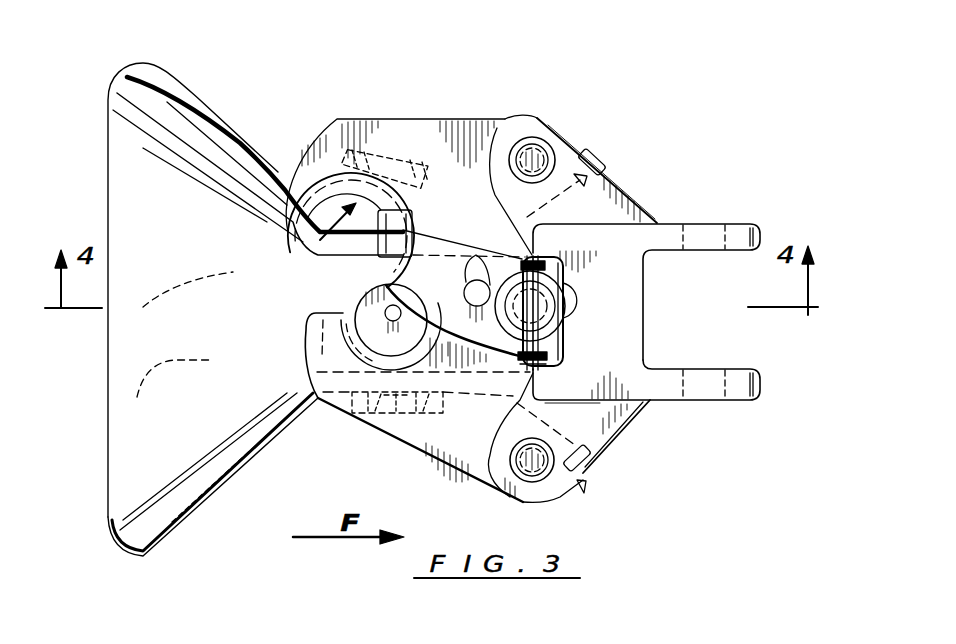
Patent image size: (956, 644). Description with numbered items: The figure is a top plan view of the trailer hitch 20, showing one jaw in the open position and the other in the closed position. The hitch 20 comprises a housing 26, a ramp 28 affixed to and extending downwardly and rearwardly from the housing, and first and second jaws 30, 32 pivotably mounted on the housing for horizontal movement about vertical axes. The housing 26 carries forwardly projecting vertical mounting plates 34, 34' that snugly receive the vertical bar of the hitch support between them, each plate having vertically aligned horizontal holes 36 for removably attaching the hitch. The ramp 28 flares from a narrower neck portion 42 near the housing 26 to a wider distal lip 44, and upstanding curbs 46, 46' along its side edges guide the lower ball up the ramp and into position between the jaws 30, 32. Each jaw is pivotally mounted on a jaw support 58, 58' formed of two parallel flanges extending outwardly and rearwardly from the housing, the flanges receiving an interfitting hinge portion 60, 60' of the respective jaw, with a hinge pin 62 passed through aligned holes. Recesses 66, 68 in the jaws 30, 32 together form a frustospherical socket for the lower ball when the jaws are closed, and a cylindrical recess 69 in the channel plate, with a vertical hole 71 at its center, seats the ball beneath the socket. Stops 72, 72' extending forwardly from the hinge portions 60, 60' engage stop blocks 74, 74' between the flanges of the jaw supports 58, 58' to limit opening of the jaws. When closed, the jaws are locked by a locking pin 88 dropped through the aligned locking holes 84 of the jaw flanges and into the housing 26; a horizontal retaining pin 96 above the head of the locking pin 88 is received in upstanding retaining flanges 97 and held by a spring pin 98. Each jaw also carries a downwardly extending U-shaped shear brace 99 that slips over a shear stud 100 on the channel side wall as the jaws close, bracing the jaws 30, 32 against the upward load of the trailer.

The hitch 20 is at (592, 88).
The housing 26 is at (690, 194).
The ramp 28 is at (198, 411).
The first jaw 30 is at (394, 118).
The second jaw 32 is at (453, 477).
The mounting plate 34 is at (654, 273).
The mounting plate 34' is at (676, 381).
The hitch mounting hole 36 is at (702, 243).
The neck portion 42 is at (347, 293).
The lip 44 is at (107, 426).
The curb 46 is at (258, 162).
The curb 46' is at (212, 472).
The jaw support 58 is at (597, 160).
The jaw support 58' is at (636, 436).
The hinge portion 60 is at (535, 171).
The hinge portion 60' is at (559, 452).
The hinge pin 62 is at (538, 137).
The recess 66 is at (300, 240).
The recess 68 is at (352, 322).
The cylindrical recess 69 is at (380, 334).
The vertical hole 71 is at (388, 304).
The jaw stop 72 is at (619, 167).
The jaw stop 72' is at (613, 491).
The stop block 74 is at (619, 148).
The stop block 74' is at (613, 459).
The locking hole 84 is at (478, 280).
The locking pin 88 is at (543, 333).
The retaining pin 96 is at (577, 312).
The retaining flange 97 is at (562, 263).
The spring pin 98 is at (570, 292).
The shear brace 99 is at (348, 403).
The shear stud 100 is at (397, 410).